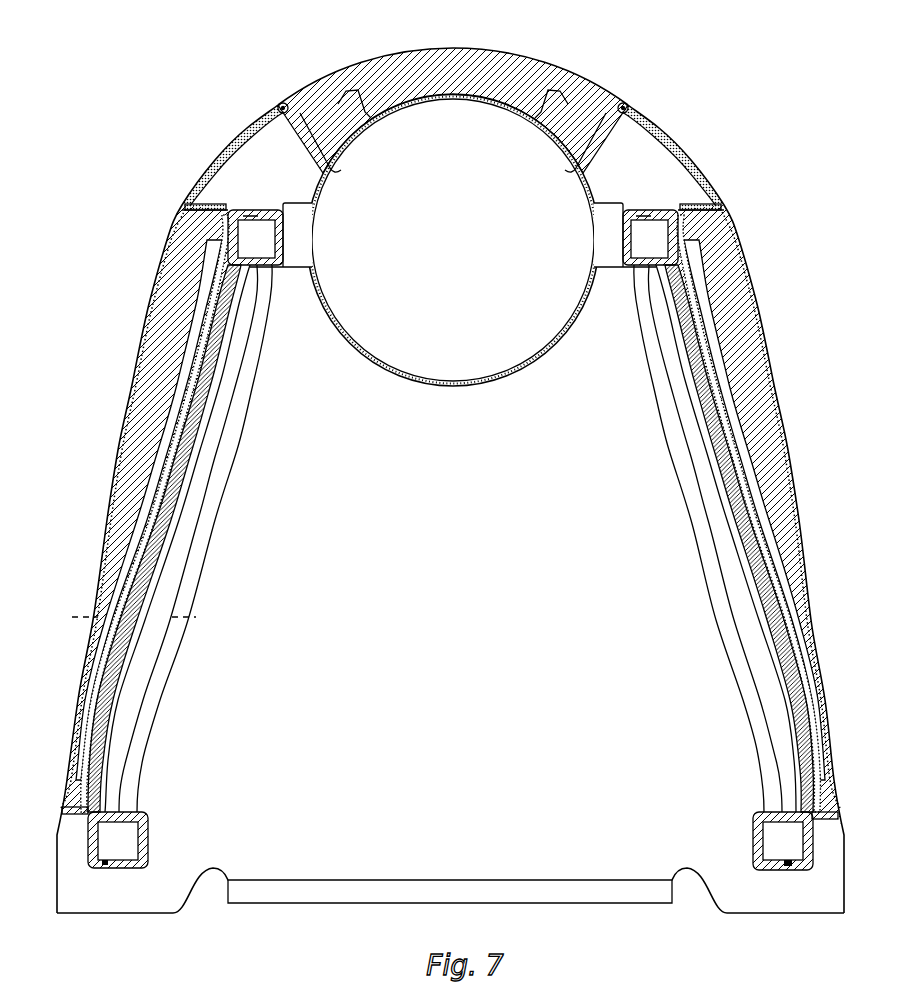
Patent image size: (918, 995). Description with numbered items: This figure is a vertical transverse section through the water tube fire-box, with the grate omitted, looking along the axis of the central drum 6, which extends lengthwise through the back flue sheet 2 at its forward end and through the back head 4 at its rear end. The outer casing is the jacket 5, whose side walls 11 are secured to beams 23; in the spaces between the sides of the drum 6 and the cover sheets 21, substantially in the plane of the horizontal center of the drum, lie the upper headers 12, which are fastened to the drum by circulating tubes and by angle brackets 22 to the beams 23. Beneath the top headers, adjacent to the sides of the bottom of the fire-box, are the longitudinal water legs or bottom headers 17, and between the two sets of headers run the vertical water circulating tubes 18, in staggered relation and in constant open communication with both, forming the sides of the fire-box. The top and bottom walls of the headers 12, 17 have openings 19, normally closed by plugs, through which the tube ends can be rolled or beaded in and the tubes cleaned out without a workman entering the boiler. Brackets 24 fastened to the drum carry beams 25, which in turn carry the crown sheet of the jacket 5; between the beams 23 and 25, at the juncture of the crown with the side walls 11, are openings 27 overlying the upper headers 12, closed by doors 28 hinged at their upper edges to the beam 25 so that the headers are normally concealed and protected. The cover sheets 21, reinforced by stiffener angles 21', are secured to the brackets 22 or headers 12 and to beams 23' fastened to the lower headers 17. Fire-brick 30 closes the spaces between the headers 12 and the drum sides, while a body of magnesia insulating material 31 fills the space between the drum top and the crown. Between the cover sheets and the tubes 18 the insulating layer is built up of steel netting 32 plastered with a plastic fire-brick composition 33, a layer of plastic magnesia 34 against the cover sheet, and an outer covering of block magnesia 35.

The back flue sheet 2 is at (450, 760).
The back head 4 is at (134, 617).
The jacket 5 is at (277, 109).
The drum 6 is at (513, 362).
The side walls 11 is at (122, 450).
The upper headers 12 is at (247, 227).
The bottom headers 17 is at (130, 836).
The vertical water circulating tubes 18 is at (170, 573).
The openings 19 is at (247, 227).
The cover sheets 21 is at (450, 520).
The stiffener angles 21' is at (451, 510).
The angle brackets 22 is at (200, 223).
The beams 23 is at (451, 201).
The beams 23' is at (450, 836).
The brackets 24 is at (600, 150).
The beams 25 is at (623, 103).
The openings 27 is at (662, 186).
The doors 28 is at (652, 160).
The fire-brick 30 is at (606, 265).
The insulating material 31 is at (492, 56).
The steel netting 32 is at (213, 409).
The plastic fire-brick composition 33 is at (200, 441).
The plastic magnesia 34 is at (190, 481).
The block magnesia 35 is at (108, 491).